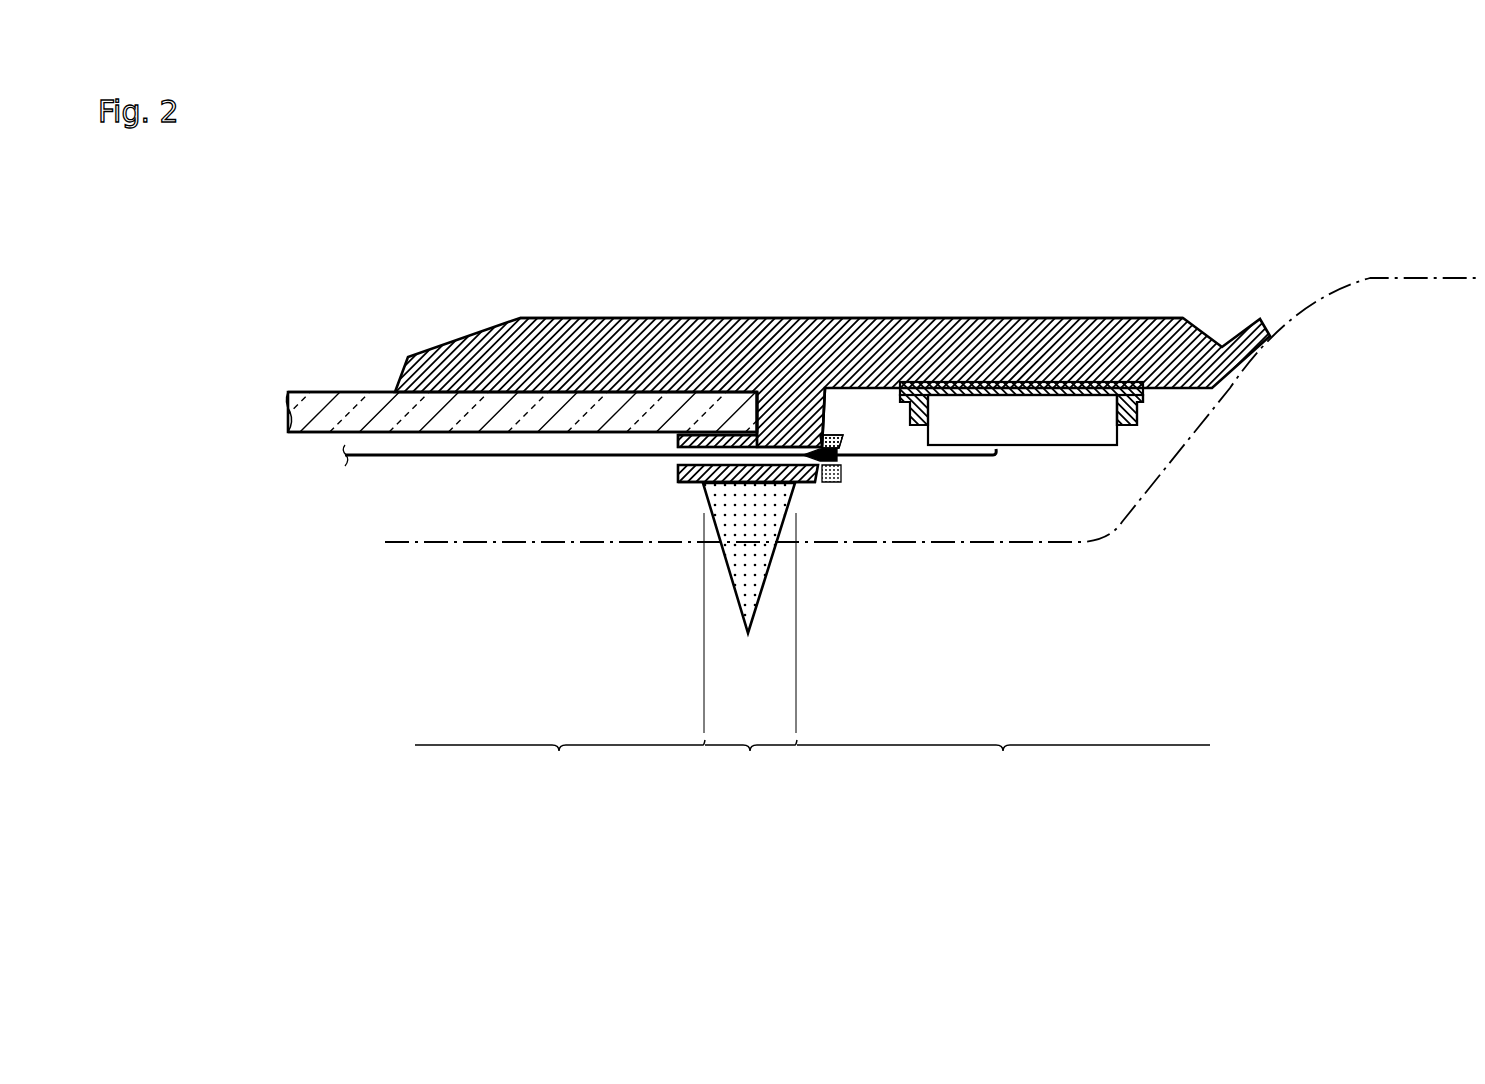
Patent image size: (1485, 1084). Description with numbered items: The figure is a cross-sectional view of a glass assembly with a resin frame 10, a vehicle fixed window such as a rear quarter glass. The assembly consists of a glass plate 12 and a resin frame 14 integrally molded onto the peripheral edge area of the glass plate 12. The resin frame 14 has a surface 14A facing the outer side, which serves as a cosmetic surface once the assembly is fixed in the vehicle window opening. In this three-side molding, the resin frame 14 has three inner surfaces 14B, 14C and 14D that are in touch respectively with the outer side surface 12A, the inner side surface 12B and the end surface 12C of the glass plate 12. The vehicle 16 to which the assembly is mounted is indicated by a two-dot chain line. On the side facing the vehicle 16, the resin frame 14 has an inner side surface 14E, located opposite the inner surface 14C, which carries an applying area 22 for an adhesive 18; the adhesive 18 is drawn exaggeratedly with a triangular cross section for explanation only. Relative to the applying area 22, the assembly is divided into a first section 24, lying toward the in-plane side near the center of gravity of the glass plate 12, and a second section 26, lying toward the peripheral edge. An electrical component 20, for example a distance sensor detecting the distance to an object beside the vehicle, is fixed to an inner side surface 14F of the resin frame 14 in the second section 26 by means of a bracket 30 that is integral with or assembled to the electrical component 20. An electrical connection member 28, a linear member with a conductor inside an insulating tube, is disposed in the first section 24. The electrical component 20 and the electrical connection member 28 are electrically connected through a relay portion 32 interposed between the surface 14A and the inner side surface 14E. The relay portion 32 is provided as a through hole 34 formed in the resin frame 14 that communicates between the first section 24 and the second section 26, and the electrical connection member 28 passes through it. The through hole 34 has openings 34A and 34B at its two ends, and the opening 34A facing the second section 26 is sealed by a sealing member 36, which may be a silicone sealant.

The glass assembly with a resin frame 10 is at (1000, 216).
The glass plate 12 is at (308, 390).
The outer side surface 12A is at (347, 392).
The inner side surface 12B is at (299, 432).
The end surface 12C is at (763, 408).
The resin frame 14 is at (1076, 315).
The surface (outer side surface) 14A is at (923, 316).
The inner surface 14B is at (565, 392).
The inner surface 14C is at (693, 432).
The inner surface 14D is at (757, 418).
The inner side surface 14E is at (808, 481).
The inner side surface 14F is at (1057, 396).
The vehicle 16 is at (1409, 277).
The adhesive 18 is at (745, 593).
The electrical component 20 is at (1028, 436).
The applying area 22 is at (751, 762).
The first section 24 is at (560, 762).
The second section 26 is at (1003, 764).
The electrical connection member 28 is at (424, 460).
The bracket 30 is at (1140, 412).
The relay portion 32 is at (746, 494).
The through hole 34 is at (892, 525).
The opening 34A is at (843, 472).
The opening 34B is at (676, 460).
The sealing member 36 is at (840, 440).